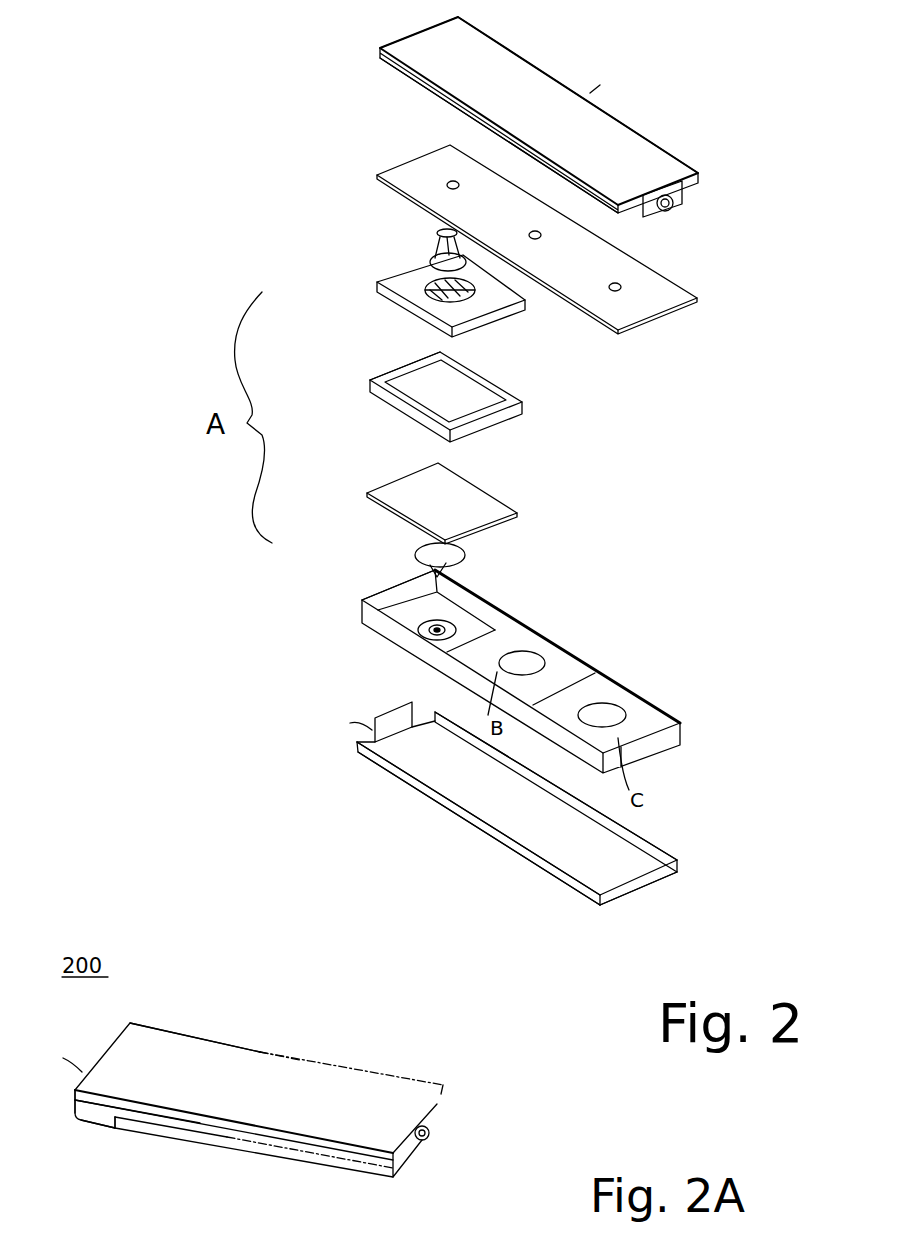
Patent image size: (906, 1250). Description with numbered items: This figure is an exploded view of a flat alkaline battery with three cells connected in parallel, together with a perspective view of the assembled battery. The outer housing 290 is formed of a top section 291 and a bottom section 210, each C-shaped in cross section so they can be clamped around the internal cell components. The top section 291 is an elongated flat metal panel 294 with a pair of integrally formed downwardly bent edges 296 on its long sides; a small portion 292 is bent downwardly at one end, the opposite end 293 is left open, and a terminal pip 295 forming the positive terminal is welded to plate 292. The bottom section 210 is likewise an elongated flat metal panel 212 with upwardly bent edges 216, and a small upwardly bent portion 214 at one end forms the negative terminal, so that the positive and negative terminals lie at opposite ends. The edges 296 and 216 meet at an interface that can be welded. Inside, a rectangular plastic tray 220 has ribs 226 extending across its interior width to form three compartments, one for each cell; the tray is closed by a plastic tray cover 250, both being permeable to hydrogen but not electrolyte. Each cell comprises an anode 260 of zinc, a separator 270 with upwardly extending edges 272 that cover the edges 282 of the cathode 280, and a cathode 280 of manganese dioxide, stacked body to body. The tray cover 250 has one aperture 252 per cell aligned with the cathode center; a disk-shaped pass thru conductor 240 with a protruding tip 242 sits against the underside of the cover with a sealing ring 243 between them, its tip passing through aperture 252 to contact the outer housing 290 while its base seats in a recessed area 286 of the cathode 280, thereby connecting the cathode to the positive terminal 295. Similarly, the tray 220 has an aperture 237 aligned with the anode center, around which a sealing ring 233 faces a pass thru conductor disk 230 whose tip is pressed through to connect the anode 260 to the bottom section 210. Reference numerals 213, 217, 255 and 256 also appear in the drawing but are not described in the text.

In FIG. 2, the bottom section 210 is at (668, 887).
In FIG. 2A, the bottom section 210 is at (205, 1147).
In FIG. 2, the elongated flat metal panel 212 is at (477, 827).
In FIG. 2, the base corner 213 is at (628, 897).
In FIG. 2, the upwardly bent integrally formed portion 214 is at (376, 717).
In FIG. 2A, the upwardly bent integrally formed portion 214 is at (97, 1065).
In FIG. 2, the upwardly bent edges 216 is at (553, 870).
In FIG. 2A, the upwardly bent edges 216 is at (93, 1122).
In FIG. 2A, the notch 217 is at (113, 1128).
In FIG. 2, the plastic tray 220 is at (462, 681).
In FIG. 2, the ribs 226 is at (394, 595).
In FIG. 2, the pass thru conductor disk 230 is at (465, 560).
In FIG. 2, the sealing ring 233 is at (455, 574).
In FIG. 2, the aperture 237 is at (421, 627).
In FIG. 2, the pass thru conductor disk 240 is at (470, 263).
In FIG. 2, the protruding tip 242 is at (435, 245).
In FIG. 2, the sealing ring 243 is at (432, 218).
In FIG. 2, the plastic tray cover 250 is at (665, 320).
In FIG. 2, the aperture 252 is at (445, 182).
In FIG. 2, the positive terminal 255 is at (667, 215).
In FIG. 2, the contact area 256 is at (422, 283).
In FIG. 2, the anode 260 is at (500, 500).
In FIG. 2, the separator 270 is at (468, 405).
In FIG. 2, the upwardly extending edges 272 is at (380, 392).
In FIG. 2, the cathode 280 is at (512, 313).
In FIG. 2, the edges of the cathode 282 is at (387, 292).
In FIG. 2, the recessed area 286 is at (542, 662).
In FIG. 2, the outer housing 290 is at (658, 143).
In FIG. 2A, the outer housing 290 is at (350, 1068).
In FIG. 2, the top section 291 is at (570, 103).
In FIG. 2A, the top section 291 is at (257, 1058).
In FIG. 2, the downwardly bent integrally formed portion 292 is at (680, 190).
In FIG. 2, the opposite end 293 is at (412, 31).
In FIG. 2, the elongated flat metal panel 294 is at (493, 55).
In FIG. 2A, the elongated flat metal panel 294 is at (180, 1046).
In FIG. 2A, the terminal pip 295 is at (432, 1132).
In FIG. 2, the downwardly bent edges 296 is at (392, 73).
In FIG. 2A, the downwardly bent edges 296 is at (87, 1100).